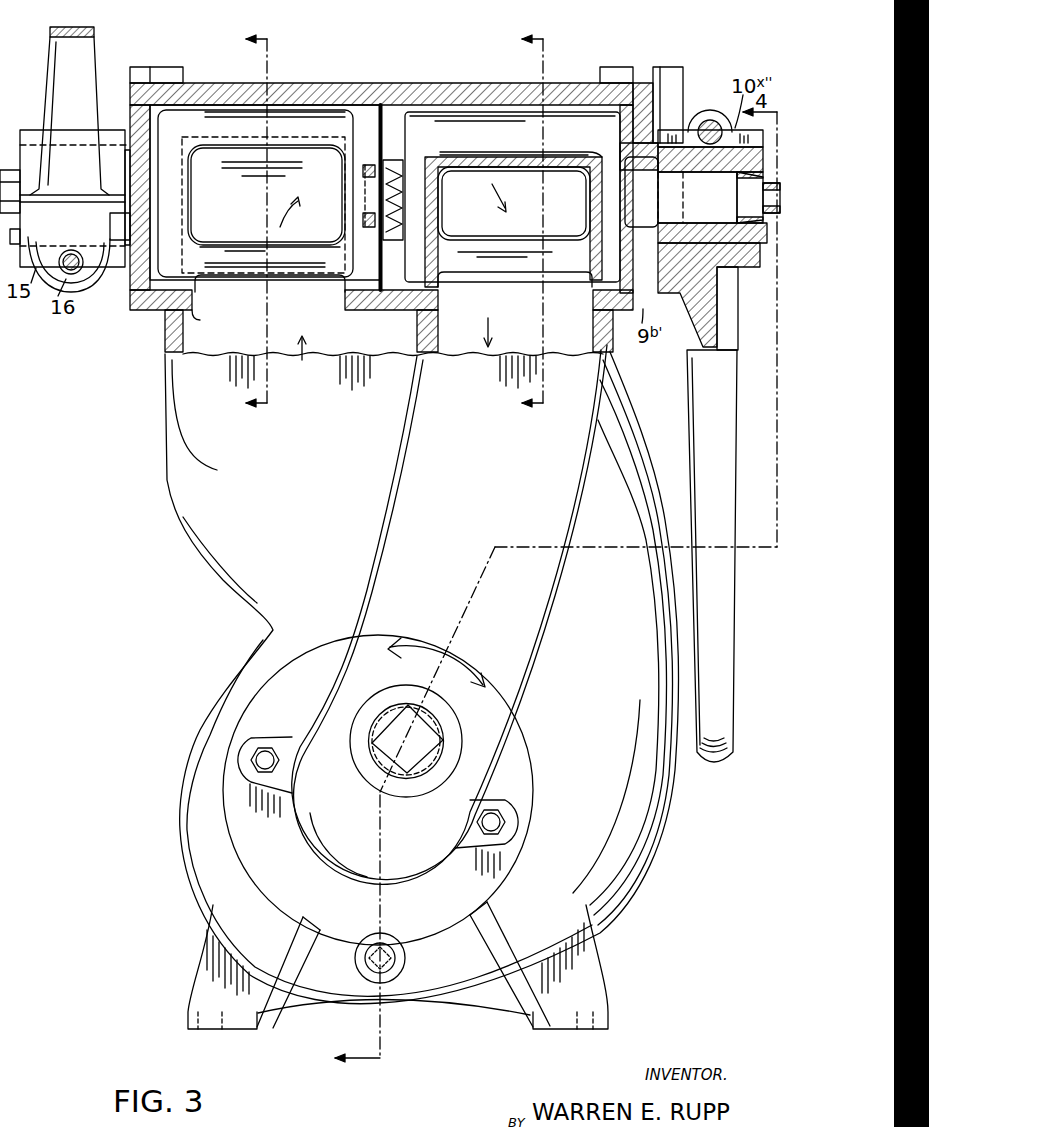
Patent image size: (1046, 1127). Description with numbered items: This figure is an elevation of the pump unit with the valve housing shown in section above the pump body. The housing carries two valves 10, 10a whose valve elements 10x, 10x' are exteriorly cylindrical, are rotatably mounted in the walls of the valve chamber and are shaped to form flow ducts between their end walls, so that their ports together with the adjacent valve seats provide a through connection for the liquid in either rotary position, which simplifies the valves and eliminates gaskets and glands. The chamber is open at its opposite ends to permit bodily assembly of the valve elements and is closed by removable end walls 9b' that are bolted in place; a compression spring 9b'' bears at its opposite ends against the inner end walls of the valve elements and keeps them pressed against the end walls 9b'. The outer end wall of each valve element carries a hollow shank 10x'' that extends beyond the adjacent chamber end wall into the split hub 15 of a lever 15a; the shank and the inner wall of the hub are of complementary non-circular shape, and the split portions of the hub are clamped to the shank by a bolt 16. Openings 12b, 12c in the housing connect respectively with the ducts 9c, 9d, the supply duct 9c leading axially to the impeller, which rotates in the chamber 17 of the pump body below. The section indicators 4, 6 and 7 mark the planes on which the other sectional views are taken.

The section line 4- 4 is at (357, 941).
The section line 6- 6 is at (269, 227).
The distributing member 7 is at (545, 220).
The end walls 9b' is at (80, 276).
The compression spring 9b'' is at (350, 201).
The supply duct 9c is at (462, 350).
The duct 9d is at (398, 350).
The valve 10 is at (636, 137).
The valve 10a is at (382, 118).
The valve element 10x is at (512, 232).
The valve element 10x' is at (270, 317).
The hollow shank 10x'' is at (246, 198).
The opening 12b is at (595, 299).
The opening 12c is at (197, 297).
The split hub 15 is at (747, 260).
The lever 15a is at (61, 86).
The bolt 16 is at (710, 145).
The chamber 17 is at (640, 823).